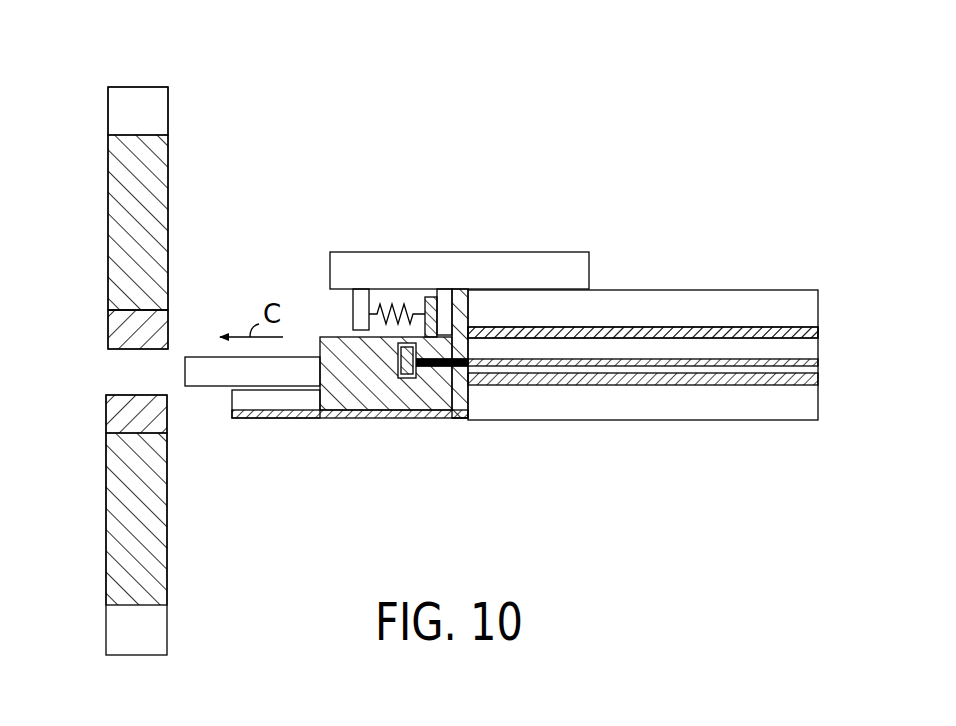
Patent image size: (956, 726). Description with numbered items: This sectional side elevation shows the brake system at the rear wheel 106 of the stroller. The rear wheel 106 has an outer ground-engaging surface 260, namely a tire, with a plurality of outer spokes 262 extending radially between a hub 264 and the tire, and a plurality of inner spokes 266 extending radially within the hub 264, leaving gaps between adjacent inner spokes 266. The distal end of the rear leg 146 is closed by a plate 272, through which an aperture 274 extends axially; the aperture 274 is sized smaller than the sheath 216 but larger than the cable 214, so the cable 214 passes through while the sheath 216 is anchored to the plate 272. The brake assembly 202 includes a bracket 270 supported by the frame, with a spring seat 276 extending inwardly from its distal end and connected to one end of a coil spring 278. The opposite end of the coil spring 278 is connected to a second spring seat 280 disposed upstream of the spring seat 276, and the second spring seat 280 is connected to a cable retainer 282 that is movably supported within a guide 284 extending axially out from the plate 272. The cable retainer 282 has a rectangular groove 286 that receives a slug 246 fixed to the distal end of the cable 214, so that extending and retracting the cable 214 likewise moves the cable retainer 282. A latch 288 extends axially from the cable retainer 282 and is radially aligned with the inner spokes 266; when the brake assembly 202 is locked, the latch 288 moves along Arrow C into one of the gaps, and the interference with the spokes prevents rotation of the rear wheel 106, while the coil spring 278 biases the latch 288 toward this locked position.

The rear wheel 106 is at (107, 84).
The outer ground-engaging surface 260 is at (142, 86).
The outer spokes 262 is at (108, 180).
The hub 264 is at (134, 308).
The inner spokes 266 is at (125, 338).
The brake assembly 202 is at (300, 165).
The bracket 270 is at (495, 252).
The spring seat 276 is at (348, 304).
The coil spring 278 is at (398, 298).
The second spring seat 280 is at (443, 297).
The aperture 274 is at (470, 313).
The cable retainer 282 is at (320, 338).
The latch 288 is at (217, 387).
The guide 284 is at (270, 419).
The slug 246 is at (395, 380).
The rectangular groove 286 is at (400, 374).
The plate 272 is at (470, 412).
The rear leg 146 is at (680, 290).
The sheath 216 is at (778, 327).
The cable 214 is at (800, 366).